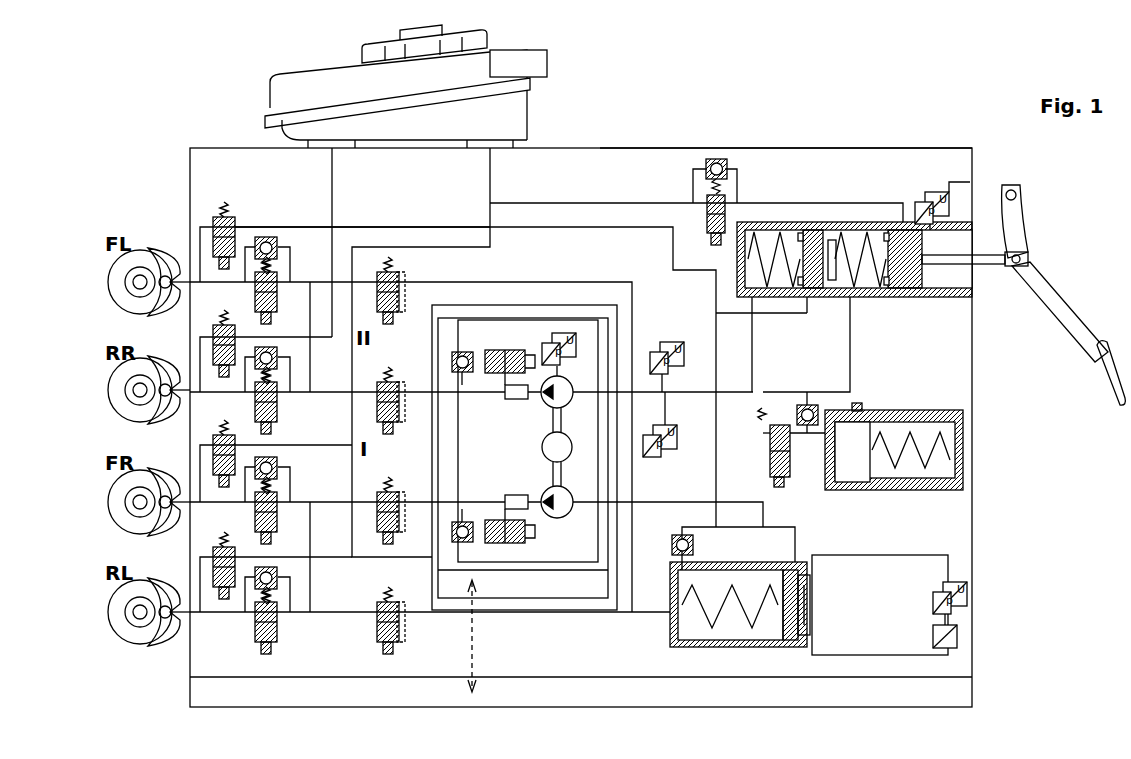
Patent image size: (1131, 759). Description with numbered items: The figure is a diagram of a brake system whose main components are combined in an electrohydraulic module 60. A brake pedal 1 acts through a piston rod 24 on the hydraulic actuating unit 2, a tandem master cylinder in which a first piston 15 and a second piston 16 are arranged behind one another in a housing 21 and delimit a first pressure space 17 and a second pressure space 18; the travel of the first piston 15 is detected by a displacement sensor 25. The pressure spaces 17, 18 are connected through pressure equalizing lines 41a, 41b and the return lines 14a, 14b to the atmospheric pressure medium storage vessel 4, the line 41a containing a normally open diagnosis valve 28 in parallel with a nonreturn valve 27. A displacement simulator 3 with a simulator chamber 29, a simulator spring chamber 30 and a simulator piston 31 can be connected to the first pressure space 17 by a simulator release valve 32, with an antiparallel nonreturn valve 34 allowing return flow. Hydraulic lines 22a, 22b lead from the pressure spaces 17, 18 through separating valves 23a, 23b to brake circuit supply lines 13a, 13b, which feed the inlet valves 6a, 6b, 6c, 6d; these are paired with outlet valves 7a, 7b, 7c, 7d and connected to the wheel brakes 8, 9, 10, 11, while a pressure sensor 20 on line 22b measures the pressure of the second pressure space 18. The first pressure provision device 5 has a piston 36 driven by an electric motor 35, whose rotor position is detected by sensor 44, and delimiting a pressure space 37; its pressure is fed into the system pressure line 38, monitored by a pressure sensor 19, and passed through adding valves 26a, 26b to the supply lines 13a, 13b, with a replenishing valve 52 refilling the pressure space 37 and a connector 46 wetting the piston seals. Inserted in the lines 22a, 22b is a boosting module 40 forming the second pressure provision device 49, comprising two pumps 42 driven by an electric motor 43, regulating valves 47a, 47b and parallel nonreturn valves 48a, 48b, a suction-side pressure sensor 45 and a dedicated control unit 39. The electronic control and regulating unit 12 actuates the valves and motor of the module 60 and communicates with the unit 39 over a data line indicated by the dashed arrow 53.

The brake pedal 1 is at (1058, 305).
The hydraulic actuating unit 2 is at (854, 245).
The displacement simulator 3 is at (895, 440).
The pressure medium storage vessel 4 is at (328, 82).
The first electrically controllable pressure provision device 5 is at (825, 589).
The inlet valve 6a is at (254, 292).
The inlet valve 6b is at (254, 402).
The inlet valve 6c is at (254, 512).
The inlet valve 6d is at (254, 620).
The outlet valve 7a is at (212, 240).
The outlet valve 7b is at (212, 348).
The outlet valve 7c is at (212, 458).
The outlet valve 7d is at (212, 568).
The wheel brake 8 is at (160, 298).
The wheel brake 9 is at (160, 406).
The wheel brake 10 is at (160, 518).
The wheel brake 11 is at (160, 628).
The electronic control and regulating unit 12 is at (960, 692).
The brake circuit supply line 13a is at (312, 562).
The brake circuit supply line 13b is at (315, 380).
The return line 14a is at (493, 160).
The return line 14b is at (335, 160).
The first piston 15 is at (915, 290).
The second piston 16 is at (818, 290).
The first pressure space 17 is at (865, 290).
The second pressure space 18 is at (762, 230).
The pressure sensor 19 is at (665, 460).
The pressure sensor 20 is at (672, 340).
The housing 21 is at (838, 146).
The hydraulic line 22a is at (405, 538).
The hydraulic line 22b is at (403, 378).
The separating valve 23a is at (385, 545).
The separating valve 23b is at (398, 430).
The piston rod 24 is at (990, 266).
The displacement sensor 25 is at (970, 182).
The adding valve 26a is at (376, 625).
The adding valve 26b is at (400, 278).
The nonreturn valve 27 is at (704, 166).
The diagnosis valve 28 is at (704, 212).
The simulator chamber 29 is at (792, 550).
The simulator spring chamber 30 is at (950, 485).
The simulator piston 31 is at (858, 420).
The simulator release valve 32 is at (780, 490).
The nonreturn valve 34 is at (805, 405).
The electric motor 35 is at (900, 555).
The piston 36 is at (785, 645).
The pressure space 37 is at (680, 625).
The system pressure line 38 is at (575, 280).
The electronic control and regulating unit 39 is at (585, 585).
The boosting module 40 is at (536, 300).
The pressure equalizing line 41a is at (812, 202).
The pressure equalizing line 41b is at (765, 318).
The pump 42 is at (572, 392).
The electric motor 43 is at (542, 435).
The rotor position sensor 44 is at (968, 600).
The pressure sensor 45 is at (548, 352).
The connector 46 is at (812, 580).
The regulating valve 47a is at (503, 515).
The regulating valve 47b is at (497, 380).
The nonreturn valve 48a is at (460, 518).
The nonreturn valve 48b is at (460, 380).
The second electrically controllable pressure provision device 49 is at (525, 447).
The replenishing valve 52 is at (695, 546).
The dashed arrow 53 is at (478, 650).
The electrohydraulic module 60 is at (930, 146).